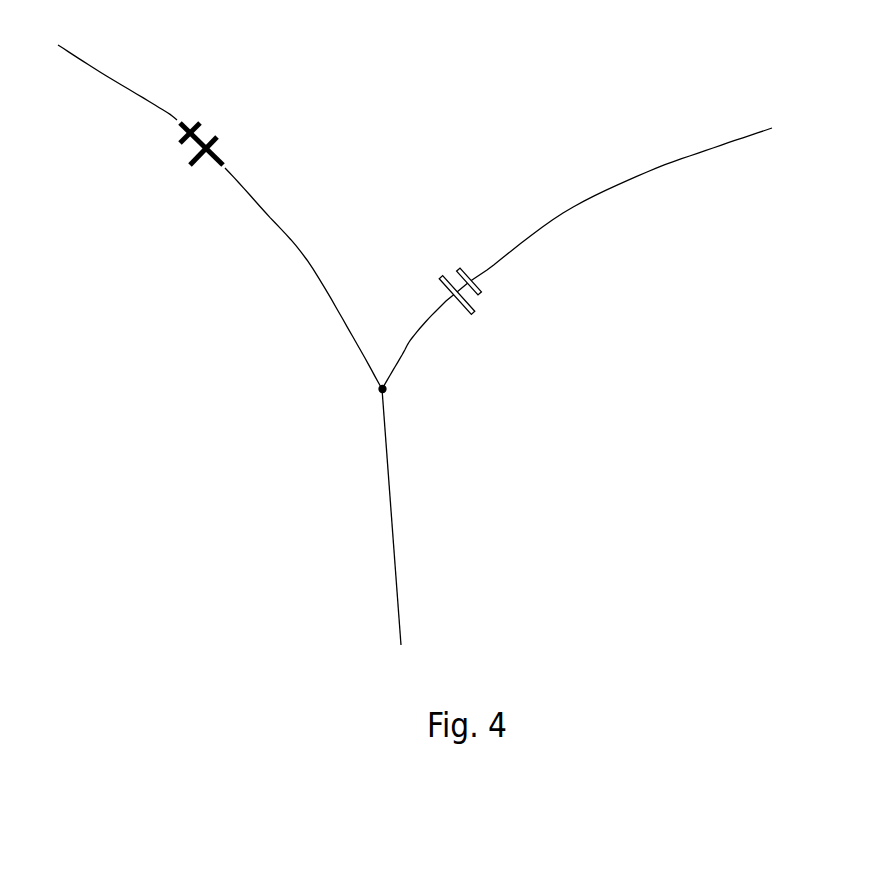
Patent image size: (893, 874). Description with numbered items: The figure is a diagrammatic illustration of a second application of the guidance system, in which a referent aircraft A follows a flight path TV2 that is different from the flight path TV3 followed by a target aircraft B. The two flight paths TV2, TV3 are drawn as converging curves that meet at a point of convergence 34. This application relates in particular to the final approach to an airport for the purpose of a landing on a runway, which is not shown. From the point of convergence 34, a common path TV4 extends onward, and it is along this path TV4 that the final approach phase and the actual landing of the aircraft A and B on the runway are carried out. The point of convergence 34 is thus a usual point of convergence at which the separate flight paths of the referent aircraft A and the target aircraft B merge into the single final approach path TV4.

The flight path TV2 is at (139, 120).
The flight path TV3 is at (562, 194).
The path TV4 is at (369, 525).
The referent aircraft A is at (218, 138).
The target aircraft B is at (475, 310).
The point of convergence 34 is at (386, 389).